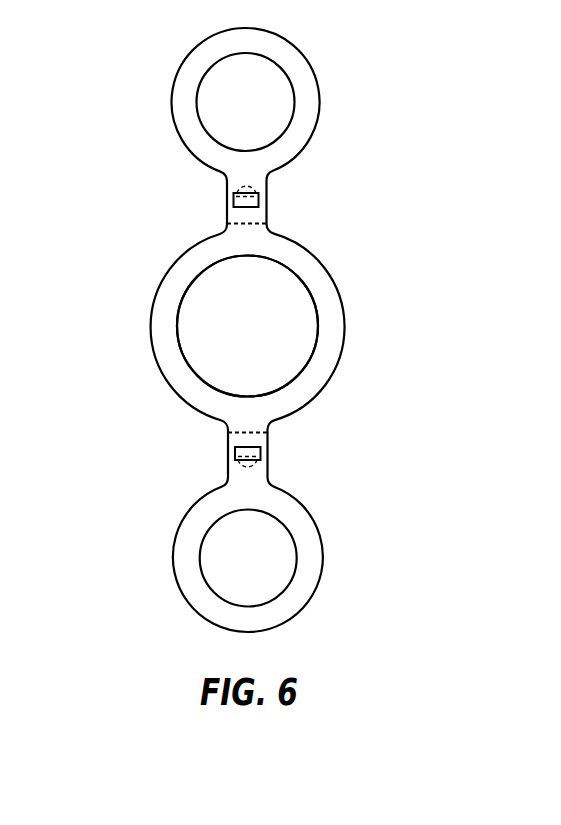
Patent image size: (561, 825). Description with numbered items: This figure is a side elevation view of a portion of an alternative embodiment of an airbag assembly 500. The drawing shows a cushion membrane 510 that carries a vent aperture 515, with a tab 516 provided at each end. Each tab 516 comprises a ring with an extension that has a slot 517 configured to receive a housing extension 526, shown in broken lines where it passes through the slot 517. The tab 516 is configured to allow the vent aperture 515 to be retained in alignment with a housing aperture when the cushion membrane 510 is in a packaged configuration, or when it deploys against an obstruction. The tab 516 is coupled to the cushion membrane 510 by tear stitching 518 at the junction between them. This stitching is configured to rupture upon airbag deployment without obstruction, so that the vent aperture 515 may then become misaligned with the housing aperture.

The assembly 500 is at (139, 170).
The cushion membrane 510 is at (151, 357).
The vent aperture 515 is at (278, 318).
The tab 516 is at (300, 86).
The locking tab 517 is at (259, 201).
The tear stitching 518 is at (247, 227).
The housing extension 526 is at (233, 191).